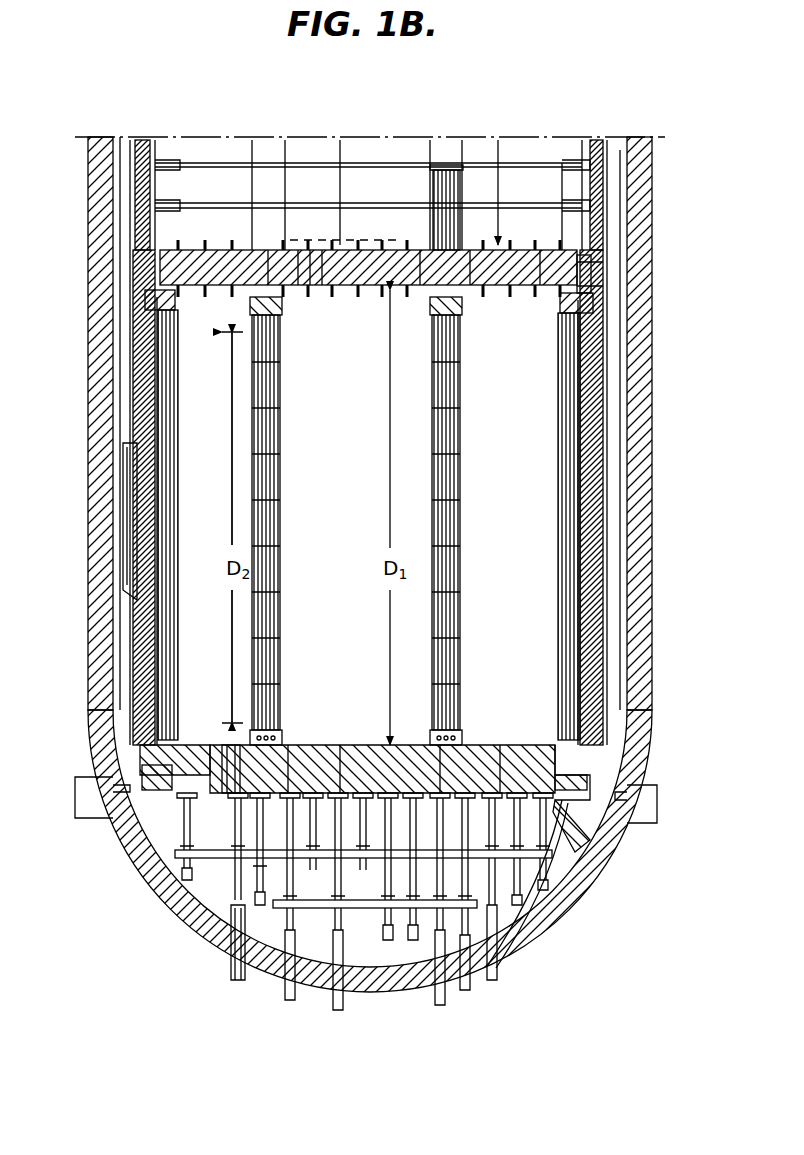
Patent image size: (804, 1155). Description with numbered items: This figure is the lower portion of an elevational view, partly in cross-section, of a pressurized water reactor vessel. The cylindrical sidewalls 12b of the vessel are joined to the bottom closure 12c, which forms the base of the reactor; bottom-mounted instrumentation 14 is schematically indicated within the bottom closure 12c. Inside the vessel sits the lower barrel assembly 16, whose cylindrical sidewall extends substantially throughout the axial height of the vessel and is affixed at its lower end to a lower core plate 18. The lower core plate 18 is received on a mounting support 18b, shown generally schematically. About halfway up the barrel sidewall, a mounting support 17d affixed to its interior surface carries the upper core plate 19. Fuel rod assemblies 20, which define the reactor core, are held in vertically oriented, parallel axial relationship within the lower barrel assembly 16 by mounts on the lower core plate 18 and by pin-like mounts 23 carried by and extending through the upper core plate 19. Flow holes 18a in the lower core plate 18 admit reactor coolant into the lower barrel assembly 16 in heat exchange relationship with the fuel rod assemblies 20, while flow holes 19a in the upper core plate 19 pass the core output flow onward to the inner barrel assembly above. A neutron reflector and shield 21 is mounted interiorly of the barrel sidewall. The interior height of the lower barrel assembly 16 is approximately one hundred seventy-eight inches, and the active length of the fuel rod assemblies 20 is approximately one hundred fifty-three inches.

The cylindrical sidewalls 12b is at (652, 680).
The bottom closure 12c is at (622, 838).
The instrumentation rods 14 is at (400, 945).
The lower barrel assembly 16 is at (127, 390).
The mounting support 17d is at (592, 276).
The lower core plate 18 is at (318, 745).
The flow holes 18a is at (222, 745).
The mounting support 18b is at (592, 856).
The upper core plate 19 is at (520, 250).
The flow holes 19a is at (297, 290).
The fuel rod assemblies 20 is at (432, 492).
The neutron reflector and shield 21 is at (172, 380).
The pin-like mounts 23 is at (483, 300).